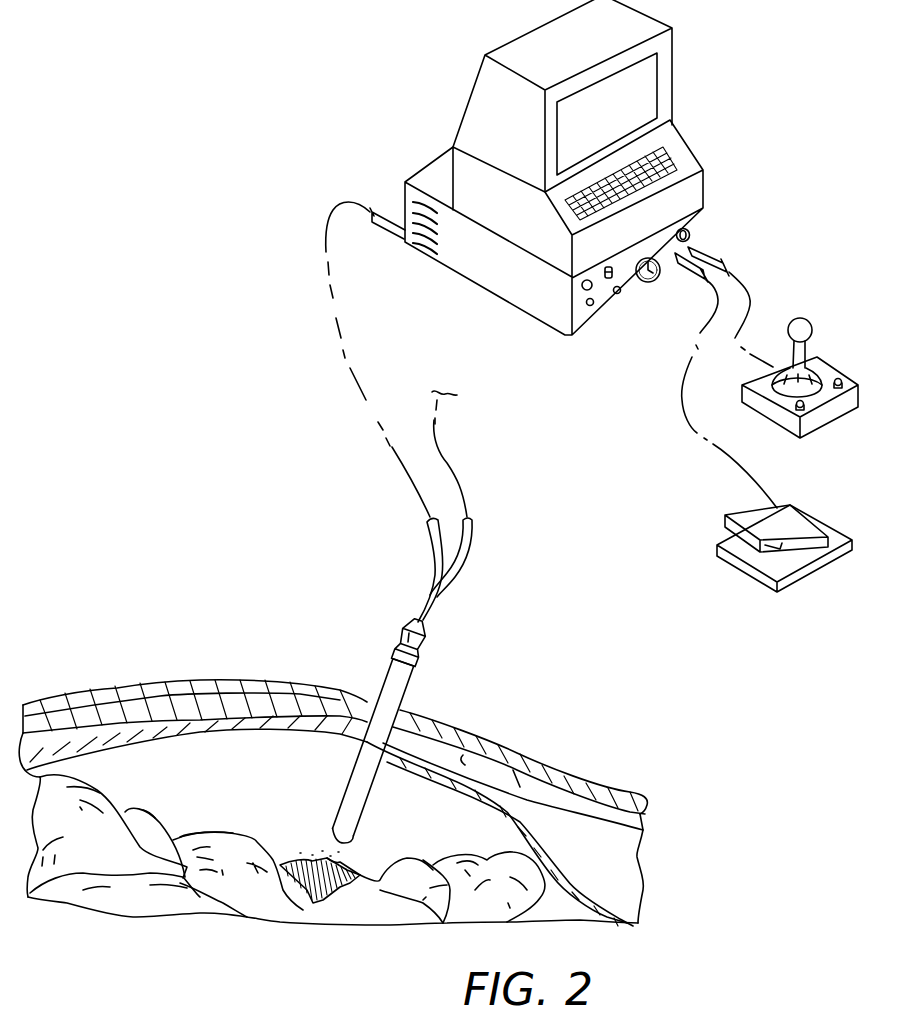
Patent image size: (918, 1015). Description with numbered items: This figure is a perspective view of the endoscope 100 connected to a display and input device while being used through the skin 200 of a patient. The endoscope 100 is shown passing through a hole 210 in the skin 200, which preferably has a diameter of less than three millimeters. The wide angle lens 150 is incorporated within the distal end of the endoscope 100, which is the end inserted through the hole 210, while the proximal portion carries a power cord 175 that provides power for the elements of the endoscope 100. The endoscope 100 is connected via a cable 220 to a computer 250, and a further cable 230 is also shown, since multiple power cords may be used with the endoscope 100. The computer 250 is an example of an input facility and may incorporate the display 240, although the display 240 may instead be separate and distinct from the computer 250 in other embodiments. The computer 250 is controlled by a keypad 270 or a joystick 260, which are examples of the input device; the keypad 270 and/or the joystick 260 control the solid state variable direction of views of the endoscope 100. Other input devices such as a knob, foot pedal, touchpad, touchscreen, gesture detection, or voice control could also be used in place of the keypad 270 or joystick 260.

The computer 250 is at (428, 140).
The display 240 is at (620, 97).
The joystick 260 is at (817, 400).
The keypad 270 is at (783, 531).
The cable 220 is at (427, 576).
The cable 230 is at (468, 564).
The power cord 175 is at (420, 623).
The endoscope 100 is at (405, 682).
The wide angle lens 150 is at (353, 847).
The skin 200 is at (265, 683).
The hole 210 is at (395, 706).